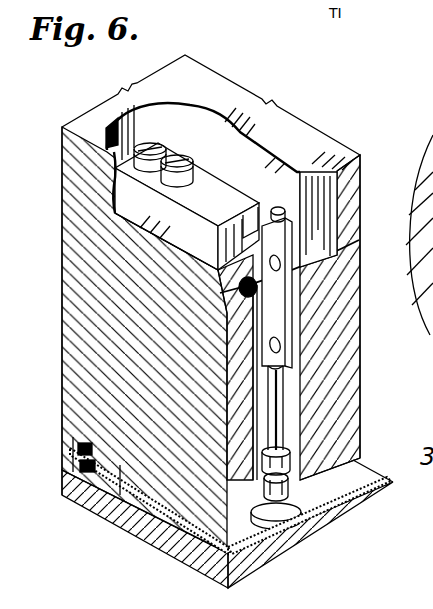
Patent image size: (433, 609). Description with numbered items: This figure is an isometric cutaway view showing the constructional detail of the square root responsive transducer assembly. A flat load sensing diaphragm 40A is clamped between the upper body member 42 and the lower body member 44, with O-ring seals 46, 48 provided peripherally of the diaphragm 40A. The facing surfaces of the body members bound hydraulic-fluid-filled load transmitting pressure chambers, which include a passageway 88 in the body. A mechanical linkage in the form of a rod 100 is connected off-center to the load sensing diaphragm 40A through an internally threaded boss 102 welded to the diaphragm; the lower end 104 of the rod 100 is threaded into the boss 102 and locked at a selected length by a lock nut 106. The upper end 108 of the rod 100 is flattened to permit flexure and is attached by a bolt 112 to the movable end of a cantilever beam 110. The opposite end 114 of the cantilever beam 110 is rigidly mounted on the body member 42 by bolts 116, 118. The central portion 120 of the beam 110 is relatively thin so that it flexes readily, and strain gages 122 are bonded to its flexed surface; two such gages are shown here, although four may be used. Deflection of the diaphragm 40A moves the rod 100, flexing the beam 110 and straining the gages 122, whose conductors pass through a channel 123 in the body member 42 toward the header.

The load sensing diaphragm 40A is at (376, 489).
The body member 42 is at (352, 325).
The body member 44 is at (137, 532).
The O-ring seal 46 is at (78, 449).
The O-ring seal 48 is at (80, 468).
The passageway 88 is at (287, 376).
The rod 100 is at (284, 411).
The internally threaded boss 102 is at (285, 530).
The lower end of the rod 104 is at (290, 450).
The lock nut 106 is at (292, 484).
The upper end of the linkage rod 108 is at (280, 294).
The cantilever beam 110 is at (297, 168).
The bolt 112 is at (286, 230).
The opposite end of the cantilever beam 114 is at (135, 187).
The bolt 116 is at (150, 143).
The bolt 118 is at (186, 153).
The thin central portion of the beam 120 is at (200, 232).
The strain gages 122 is at (246, 203).
The channel 123 is at (120, 128).